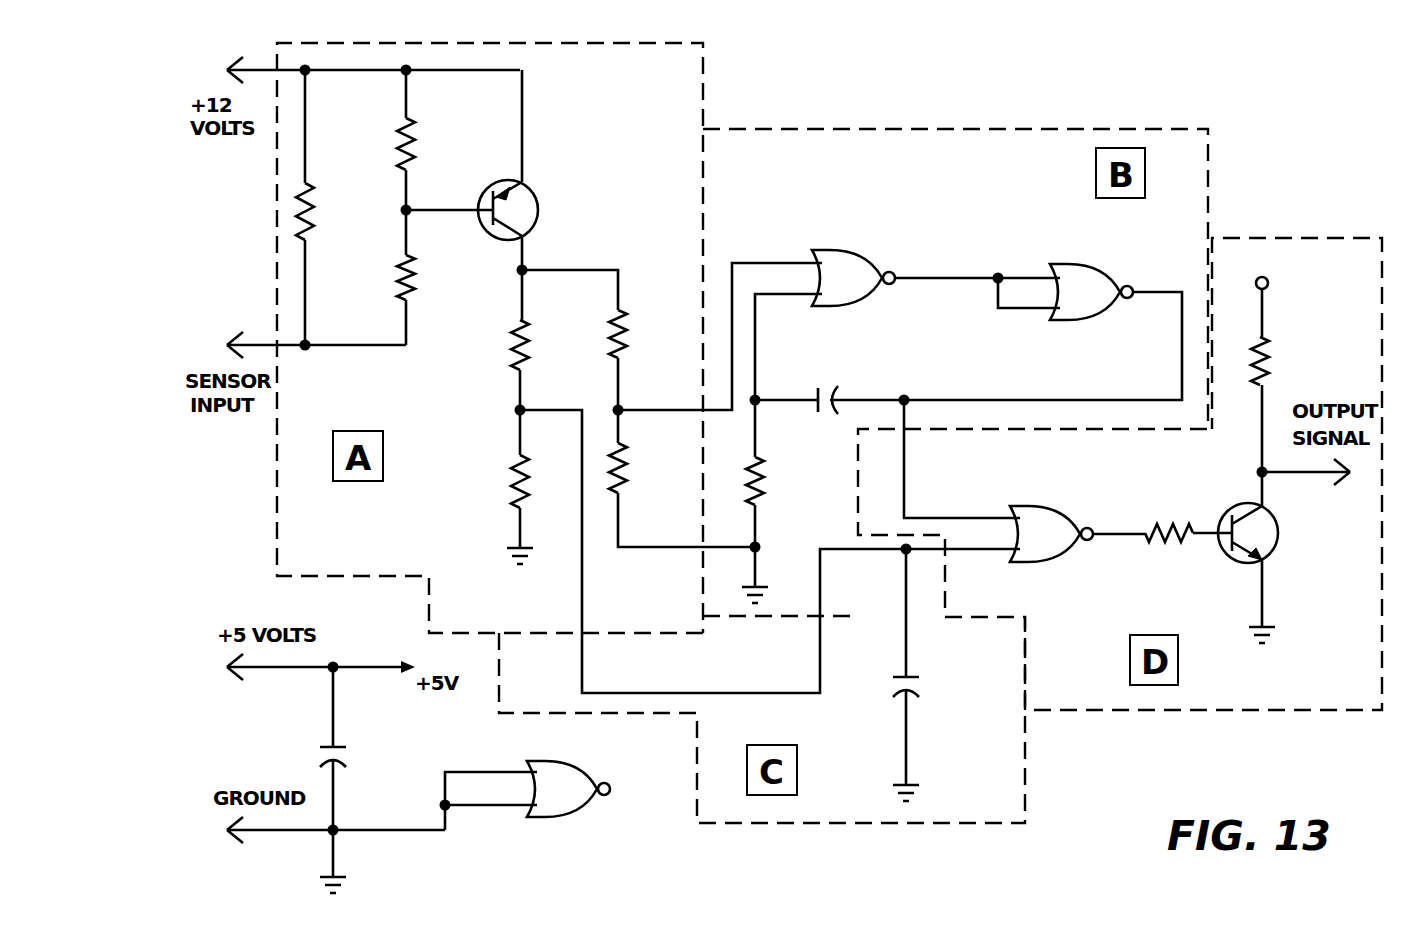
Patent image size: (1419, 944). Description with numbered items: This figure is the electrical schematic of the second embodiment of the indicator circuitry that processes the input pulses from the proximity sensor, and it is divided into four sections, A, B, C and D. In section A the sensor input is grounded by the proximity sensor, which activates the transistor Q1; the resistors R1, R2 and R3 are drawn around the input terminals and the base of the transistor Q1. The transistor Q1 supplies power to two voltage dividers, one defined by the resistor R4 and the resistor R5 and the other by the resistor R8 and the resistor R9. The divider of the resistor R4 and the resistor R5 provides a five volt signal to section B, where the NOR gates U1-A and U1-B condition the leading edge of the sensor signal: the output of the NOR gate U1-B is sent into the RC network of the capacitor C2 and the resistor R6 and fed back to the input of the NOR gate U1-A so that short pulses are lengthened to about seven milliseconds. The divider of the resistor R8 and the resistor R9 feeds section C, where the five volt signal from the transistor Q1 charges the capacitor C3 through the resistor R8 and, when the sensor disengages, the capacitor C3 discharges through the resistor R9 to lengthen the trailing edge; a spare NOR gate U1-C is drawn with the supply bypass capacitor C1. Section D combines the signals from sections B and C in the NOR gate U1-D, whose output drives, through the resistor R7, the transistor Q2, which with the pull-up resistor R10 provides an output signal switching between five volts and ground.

The resistor R1 1.8K R1 is at (333, 207).
The resistor R2 3.9K R2 is at (436, 140).
The resistor R3 33K R3 is at (435, 277).
The resistor R4 is at (651, 360).
The resistor R5 is at (682, 478).
The resistor R6 is at (785, 501).
The resistor R7 10K R7 is at (1162, 538).
The resistor R8 is at (554, 340).
The resistor R9 is at (495, 487).
The resistor 3.3K pull-up R10 is at (1287, 365).
The transistor Q1 is at (549, 170).
The transistor Q2 2N3904 Q2 is at (1294, 557).
The NOR gate U1-A 4001B U1-A is at (849, 278).
The NOR gate U1-B 4001B U1-B is at (1089, 291).
The NOR gate U1-C 4001B U1-C is at (569, 792).
The NOR gate U1-D 4001B U1-D is at (1047, 533).
The capacitor C1 0.1 C1 is at (349, 748).
The capacitor C2 is at (796, 404).
The capacitor C3 is at (920, 675).